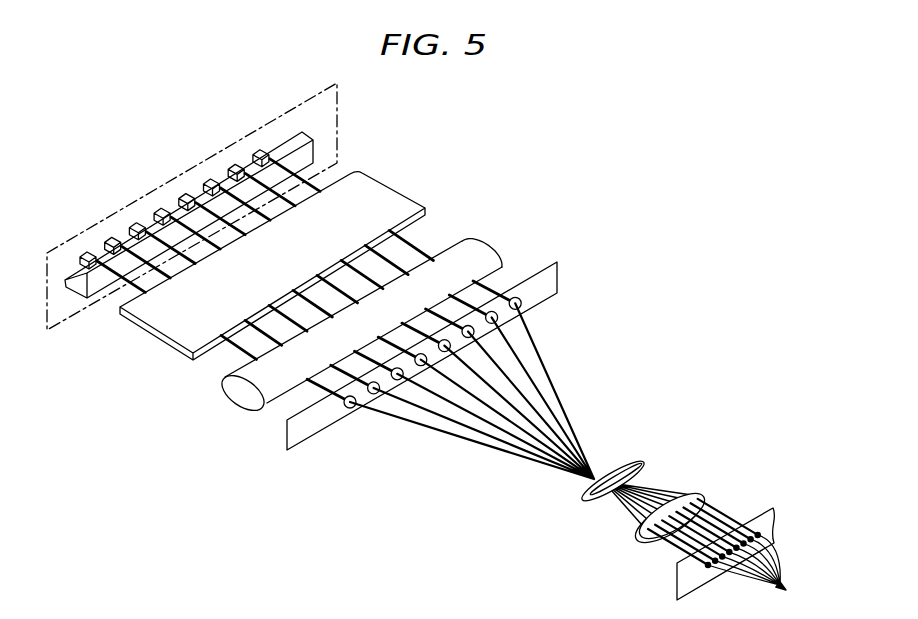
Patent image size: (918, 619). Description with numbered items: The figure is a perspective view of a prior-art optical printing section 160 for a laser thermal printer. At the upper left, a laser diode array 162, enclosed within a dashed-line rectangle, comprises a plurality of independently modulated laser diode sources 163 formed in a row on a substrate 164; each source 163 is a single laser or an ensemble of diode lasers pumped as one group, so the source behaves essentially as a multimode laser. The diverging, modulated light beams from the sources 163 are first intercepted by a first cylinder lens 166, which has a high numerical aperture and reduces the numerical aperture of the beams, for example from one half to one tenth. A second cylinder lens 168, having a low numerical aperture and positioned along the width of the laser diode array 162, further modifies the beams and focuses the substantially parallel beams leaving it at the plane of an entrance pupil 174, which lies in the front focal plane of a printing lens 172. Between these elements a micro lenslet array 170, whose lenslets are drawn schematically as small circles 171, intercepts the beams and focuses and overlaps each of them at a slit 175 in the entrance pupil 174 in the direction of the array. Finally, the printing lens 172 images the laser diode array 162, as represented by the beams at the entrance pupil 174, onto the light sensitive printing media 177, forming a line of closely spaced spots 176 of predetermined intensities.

The optical printing section 160 is at (658, 127).
The laser diode array 162 is at (83, 231).
The laser diode sources 163 is at (260, 150).
The substrate 164 is at (103, 284).
The first cylinder lens 166 is at (398, 190).
The second cylinder lens 168 is at (488, 242).
The micro lenslet array 170 is at (560, 277).
The small circles 171 is at (348, 408).
The printing lens 172 is at (690, 490).
The entrance pupil 174 is at (632, 460).
The slit 175 is at (593, 493).
The spots 176 is at (759, 572).
The light sensitive printing media 177 is at (773, 508).